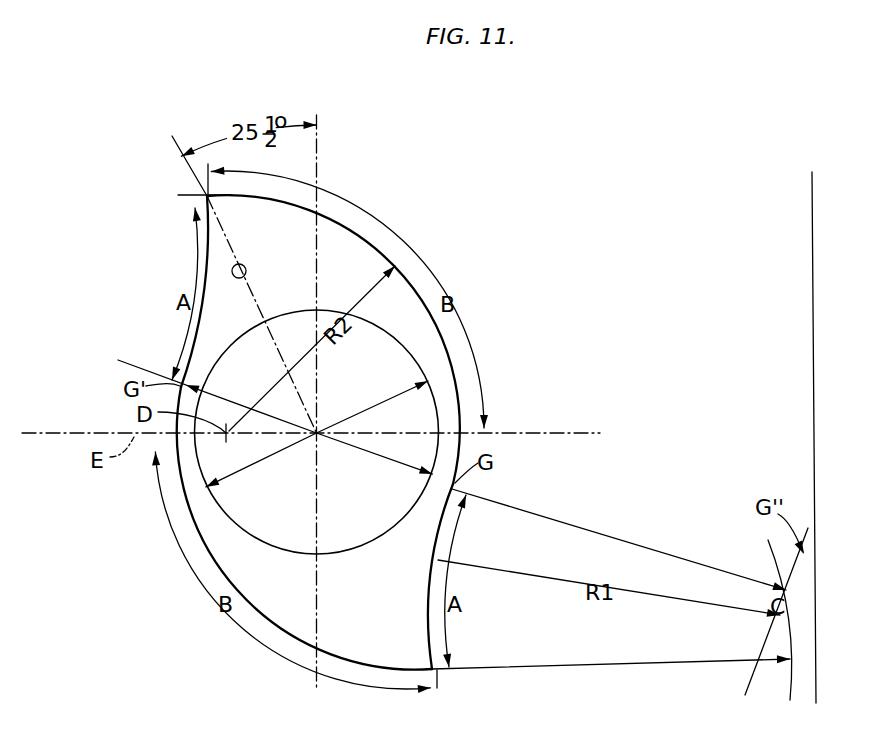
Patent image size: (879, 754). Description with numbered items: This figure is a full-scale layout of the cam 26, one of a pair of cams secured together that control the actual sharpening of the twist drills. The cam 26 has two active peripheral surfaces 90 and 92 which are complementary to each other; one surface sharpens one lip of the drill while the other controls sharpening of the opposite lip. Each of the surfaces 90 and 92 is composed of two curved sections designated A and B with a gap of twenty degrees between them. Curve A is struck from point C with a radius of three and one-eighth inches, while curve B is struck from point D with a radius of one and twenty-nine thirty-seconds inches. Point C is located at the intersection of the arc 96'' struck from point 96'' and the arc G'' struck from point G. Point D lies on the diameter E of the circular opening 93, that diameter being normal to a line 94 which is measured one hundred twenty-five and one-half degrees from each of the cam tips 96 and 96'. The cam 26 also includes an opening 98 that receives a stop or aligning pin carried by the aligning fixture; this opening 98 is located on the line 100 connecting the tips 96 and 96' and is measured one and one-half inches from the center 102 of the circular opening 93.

The cam 26 is at (345, 670).
The active peripheral surface 90 is at (181, 484).
The active peripheral surface 92 is at (444, 510).
The circular opening 93 is at (243, 533).
The line 94 is at (316, 600).
The cam tip 96 is at (186, 174).
The cam tip 96' is at (611, 685).
The arc / point 96'' is at (763, 637).
The opening 98 is at (246, 272).
The line 100 is at (222, 225).
The center 102 is at (316, 433).